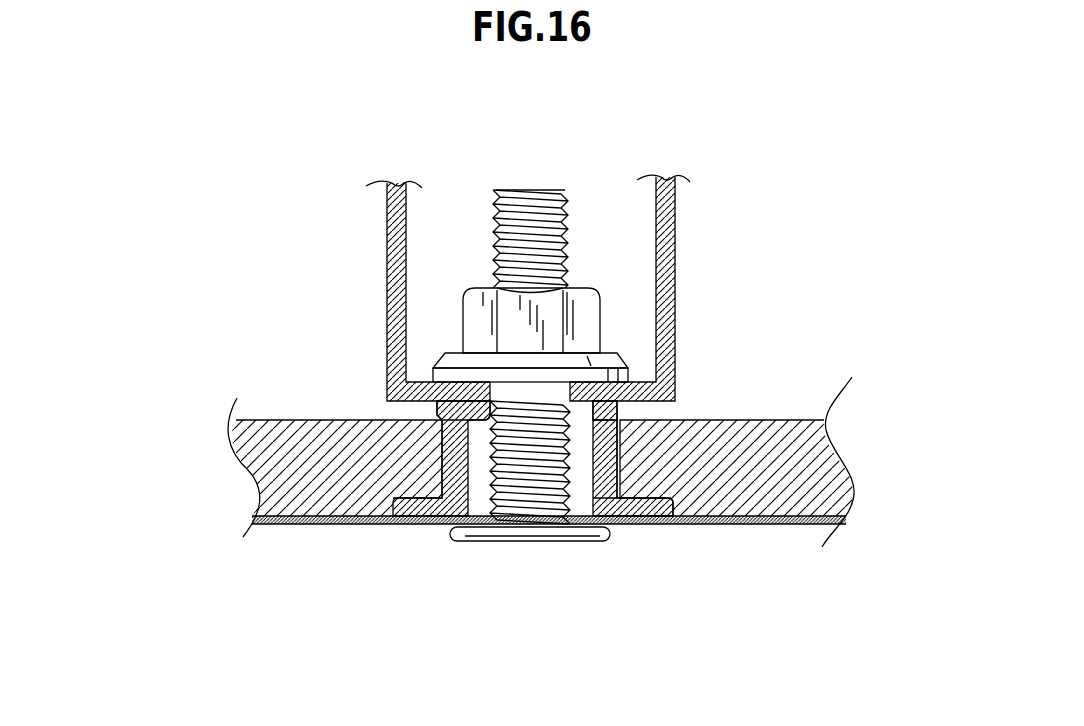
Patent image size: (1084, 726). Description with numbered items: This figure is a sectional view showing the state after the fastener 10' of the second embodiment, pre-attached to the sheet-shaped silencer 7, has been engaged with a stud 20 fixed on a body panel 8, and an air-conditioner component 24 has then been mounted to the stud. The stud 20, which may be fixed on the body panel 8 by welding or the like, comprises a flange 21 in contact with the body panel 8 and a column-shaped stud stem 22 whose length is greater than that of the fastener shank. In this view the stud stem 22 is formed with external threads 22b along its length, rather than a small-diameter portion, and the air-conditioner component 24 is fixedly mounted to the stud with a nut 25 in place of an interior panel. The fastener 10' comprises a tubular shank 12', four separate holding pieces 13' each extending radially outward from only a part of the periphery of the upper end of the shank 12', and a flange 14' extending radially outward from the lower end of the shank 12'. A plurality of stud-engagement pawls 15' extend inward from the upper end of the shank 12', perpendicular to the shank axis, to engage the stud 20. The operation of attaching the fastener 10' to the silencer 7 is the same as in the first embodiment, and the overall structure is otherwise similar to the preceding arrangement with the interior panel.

The silencer 7 is at (787, 440).
The body panel 8 is at (805, 525).
The fastener 10' is at (529, 494).
The tubular shank 12' is at (675, 537).
The holding pieces 13' is at (673, 399).
The flange 14' is at (633, 513).
The stud-engagement pawls 15' is at (397, 398).
The stud 20 is at (593, 168).
The flange 21 is at (560, 541).
The stud stem 22 is at (499, 328).
The external threads 22b is at (490, 275).
The air-conditioner component 24 is at (680, 244).
The nut 25 is at (475, 325).